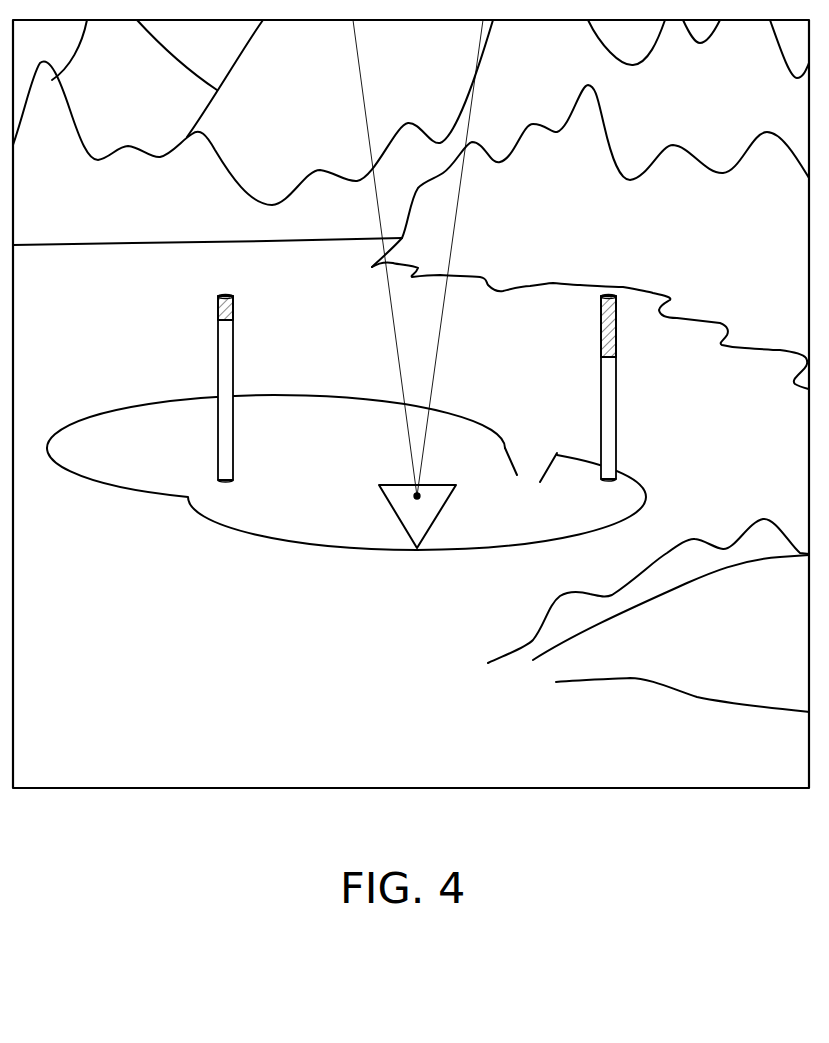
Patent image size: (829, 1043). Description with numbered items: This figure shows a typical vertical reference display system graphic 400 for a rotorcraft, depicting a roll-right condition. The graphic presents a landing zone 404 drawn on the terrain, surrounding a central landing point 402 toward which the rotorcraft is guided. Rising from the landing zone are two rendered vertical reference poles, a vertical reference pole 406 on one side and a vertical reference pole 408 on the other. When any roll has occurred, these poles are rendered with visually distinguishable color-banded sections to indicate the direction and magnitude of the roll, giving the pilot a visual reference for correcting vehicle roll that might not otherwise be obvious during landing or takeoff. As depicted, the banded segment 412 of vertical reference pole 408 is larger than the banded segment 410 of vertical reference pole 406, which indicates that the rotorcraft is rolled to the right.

The vertical reference display system graphic 400 is at (183, 729).
The landing point 402 is at (417, 499).
The landing zone 404 is at (231, 525).
The vertical reference pole 406 is at (183, 389).
The vertical reference pole 408 is at (646, 388).
The segment 410 is at (217, 296).
The segment 412 is at (620, 298).